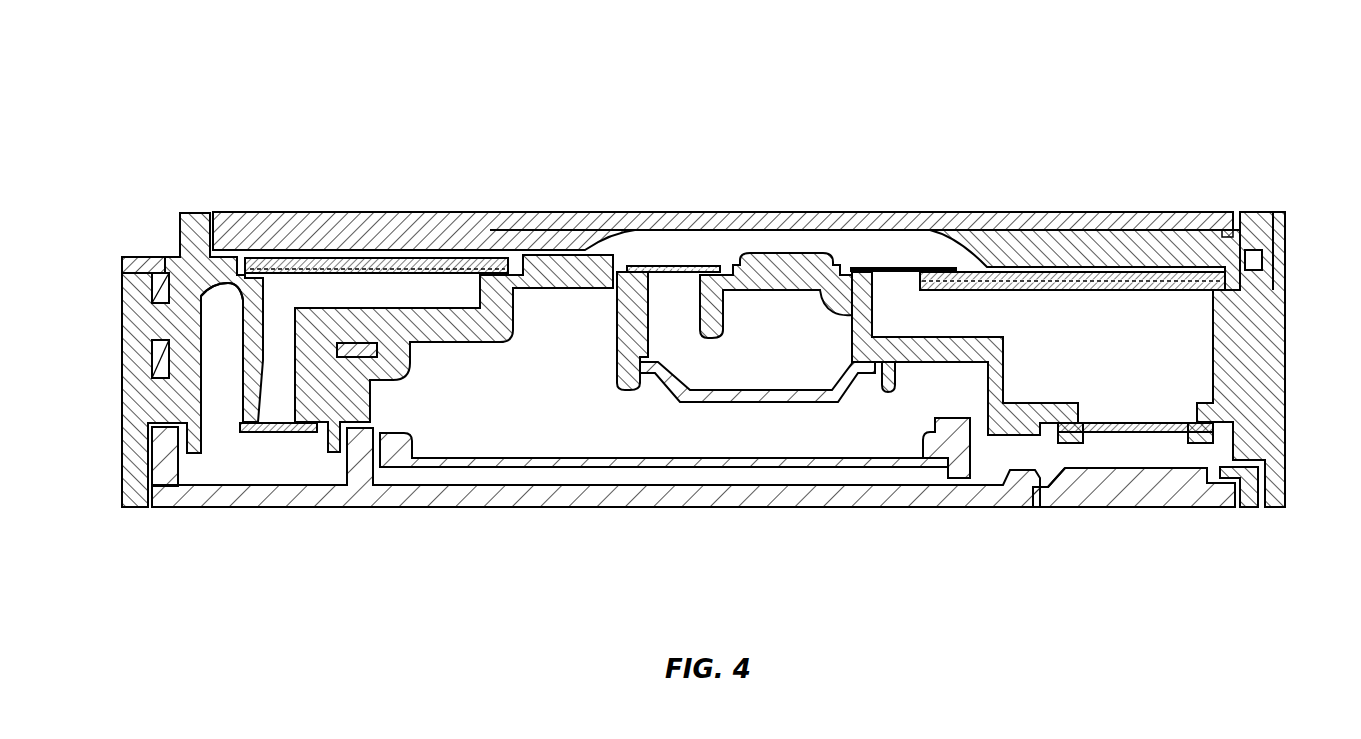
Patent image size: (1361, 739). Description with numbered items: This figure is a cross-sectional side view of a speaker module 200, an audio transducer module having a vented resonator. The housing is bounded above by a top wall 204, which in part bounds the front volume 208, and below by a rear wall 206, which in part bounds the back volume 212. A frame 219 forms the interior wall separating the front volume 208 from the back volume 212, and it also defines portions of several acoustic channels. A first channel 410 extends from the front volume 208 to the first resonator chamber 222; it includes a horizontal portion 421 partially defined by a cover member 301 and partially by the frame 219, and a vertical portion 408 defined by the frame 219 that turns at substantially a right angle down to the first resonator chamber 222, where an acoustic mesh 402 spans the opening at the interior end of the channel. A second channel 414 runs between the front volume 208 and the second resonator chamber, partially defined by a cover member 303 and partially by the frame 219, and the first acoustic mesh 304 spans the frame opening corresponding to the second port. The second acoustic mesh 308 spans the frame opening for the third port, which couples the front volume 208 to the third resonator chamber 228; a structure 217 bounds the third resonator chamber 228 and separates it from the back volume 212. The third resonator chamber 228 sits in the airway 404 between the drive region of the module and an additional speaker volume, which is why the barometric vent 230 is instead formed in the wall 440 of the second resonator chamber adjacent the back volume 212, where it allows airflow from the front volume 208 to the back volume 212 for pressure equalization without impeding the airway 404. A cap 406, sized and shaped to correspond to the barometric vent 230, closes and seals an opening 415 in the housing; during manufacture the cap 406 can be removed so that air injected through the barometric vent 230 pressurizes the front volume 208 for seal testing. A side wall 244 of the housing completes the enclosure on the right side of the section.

The speaker module 200 is at (1079, 138).
The top wall 204 is at (612, 222).
The rear wall 206 is at (635, 497).
The front volume 208 is at (806, 250).
The back volume 212 is at (1000, 447).
The structure 217 is at (765, 402).
The frame 219 is at (148, 430).
The first resonator chamber 222 is at (220, 470).
The third resonator chamber 228 is at (710, 370).
The barometric vent 230 is at (1160, 470).
The side wall 244 is at (1255, 380).
The cover member 301 is at (298, 262).
The cover member 303 is at (1155, 288).
The first acoustic mesh 304 is at (905, 266).
The second acoustic mesh 308 is at (690, 265).
The acoustic mesh 402 is at (285, 452).
The airway 404 is at (490, 420).
The cap 406 is at (1085, 487).
The vertical portion 408 is at (208, 320).
The channel 410 is at (360, 290).
The channel 414 is at (992, 312).
The opening 415 is at (1240, 515).
The horizontal portion 421 is at (412, 290).
The wall 440 is at (1063, 484).